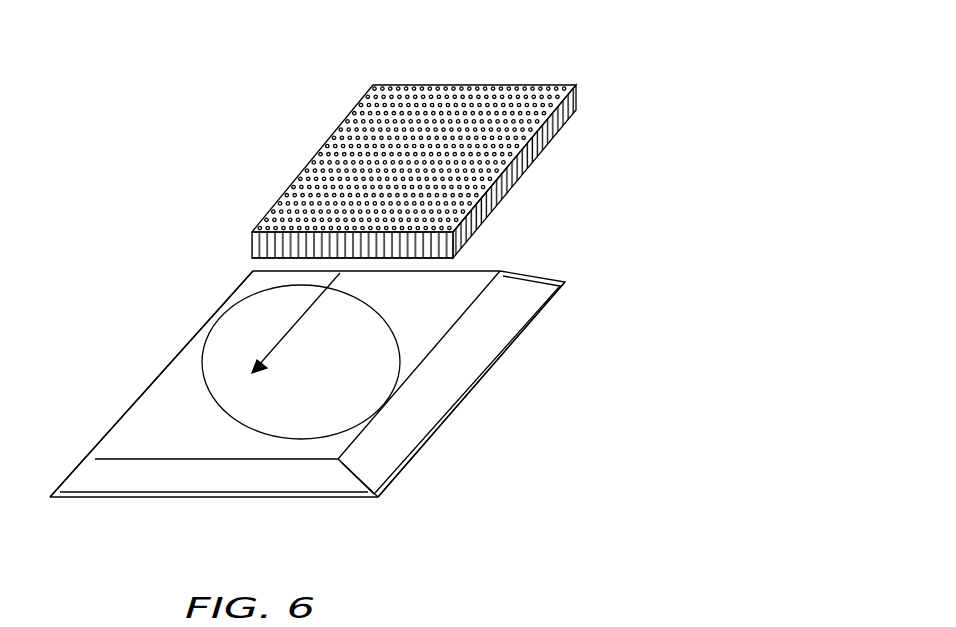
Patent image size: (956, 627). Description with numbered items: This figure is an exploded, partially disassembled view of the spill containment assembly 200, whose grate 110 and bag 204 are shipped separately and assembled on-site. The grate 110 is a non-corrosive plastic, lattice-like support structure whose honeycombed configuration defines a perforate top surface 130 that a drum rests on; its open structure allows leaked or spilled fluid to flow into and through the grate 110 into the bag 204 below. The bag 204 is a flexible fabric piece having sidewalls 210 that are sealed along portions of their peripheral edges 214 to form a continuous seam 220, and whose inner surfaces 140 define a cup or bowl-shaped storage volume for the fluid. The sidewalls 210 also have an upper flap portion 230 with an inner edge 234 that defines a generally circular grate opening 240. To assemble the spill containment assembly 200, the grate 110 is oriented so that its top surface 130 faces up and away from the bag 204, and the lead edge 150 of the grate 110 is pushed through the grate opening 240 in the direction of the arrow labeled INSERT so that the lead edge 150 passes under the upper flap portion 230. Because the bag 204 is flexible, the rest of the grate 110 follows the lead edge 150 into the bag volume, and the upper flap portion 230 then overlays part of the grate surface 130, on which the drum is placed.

The grate 110 is at (543, 83).
The perforate top surface 130 is at (428, 117).
The inner surfaces 140 is at (303, 420).
The lead edge 150 is at (427, 257).
The spill containment assembly 200 is at (146, 178).
The bag 204 is at (483, 380).
The sidewalls 210 is at (478, 338).
The peripheral edges 214 is at (395, 452).
The continuous seam 220 is at (395, 452).
The upper flap portion 230 is at (160, 423).
The inner edge 234 is at (206, 349).
The grate opening 240 is at (233, 320).